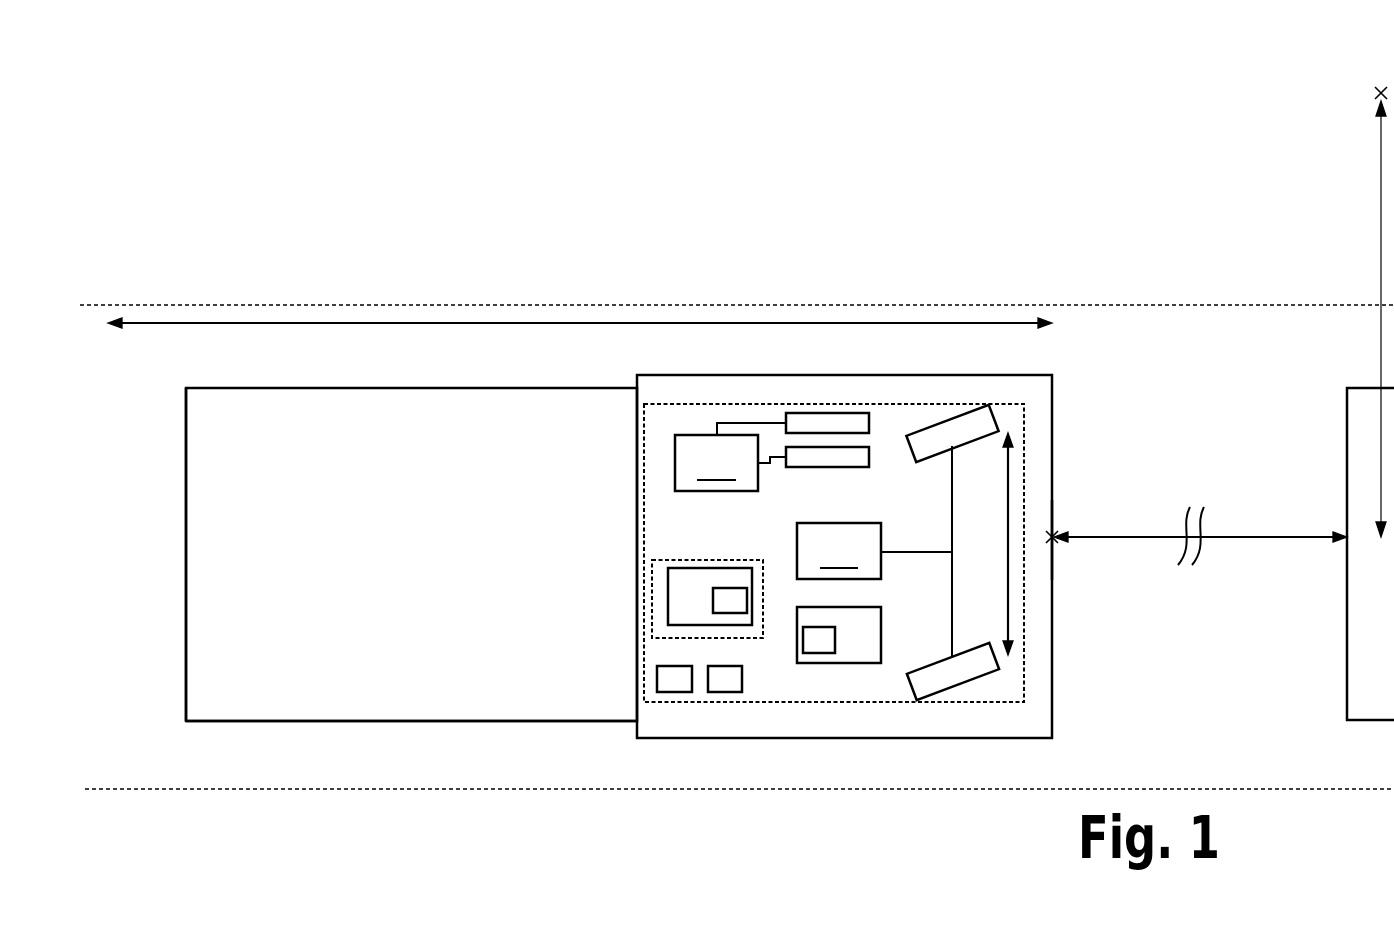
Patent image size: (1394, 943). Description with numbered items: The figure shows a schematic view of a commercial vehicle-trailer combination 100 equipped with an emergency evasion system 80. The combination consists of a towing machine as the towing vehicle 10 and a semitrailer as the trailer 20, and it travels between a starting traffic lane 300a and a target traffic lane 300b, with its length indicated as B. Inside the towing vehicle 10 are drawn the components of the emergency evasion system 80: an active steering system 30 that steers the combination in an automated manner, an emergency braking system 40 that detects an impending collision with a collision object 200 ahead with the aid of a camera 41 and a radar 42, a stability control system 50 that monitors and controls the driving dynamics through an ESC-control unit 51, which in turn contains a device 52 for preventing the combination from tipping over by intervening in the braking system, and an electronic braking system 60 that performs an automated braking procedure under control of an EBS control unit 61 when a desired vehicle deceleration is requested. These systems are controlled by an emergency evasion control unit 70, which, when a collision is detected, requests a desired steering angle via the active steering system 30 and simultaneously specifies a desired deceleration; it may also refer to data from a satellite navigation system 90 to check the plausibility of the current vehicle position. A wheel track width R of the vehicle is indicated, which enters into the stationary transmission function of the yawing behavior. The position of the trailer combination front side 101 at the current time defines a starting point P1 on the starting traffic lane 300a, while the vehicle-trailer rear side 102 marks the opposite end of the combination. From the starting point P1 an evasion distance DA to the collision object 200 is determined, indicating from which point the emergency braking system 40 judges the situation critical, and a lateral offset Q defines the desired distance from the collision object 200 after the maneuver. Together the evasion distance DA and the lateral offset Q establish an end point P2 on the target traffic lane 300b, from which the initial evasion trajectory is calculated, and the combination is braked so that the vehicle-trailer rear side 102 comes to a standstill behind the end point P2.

The towing vehicle 10 is at (845, 738).
The trailer 20 is at (491, 723).
The active steering system 30 is at (874, 551).
The emergency braking system 40 is at (730, 457).
The camera 41 is at (828, 413).
The radar 42 is at (869, 455).
The stability control system 50 is at (652, 600).
The ESC-control unit 51 is at (708, 568).
The device for preventing tipping over 52 is at (713, 598).
The electronic braking system 60 is at (840, 663).
The EBS control unit 61 is at (818, 653).
The emergency evasion control unit 70 is at (673, 692).
The emergency evasion system 80 is at (996, 405).
The satellite navigation system 90 is at (723, 692).
The commercial vehicle-trailer combination 100 is at (569, 752).
The trailer combination front side 101 is at (1068, 556).
The vehicle-trailer rear side 102 is at (174, 553).
The collision object 200 is at (1370, 388).
The starting traffic lane 300a is at (220, 761).
The target traffic lane 300b is at (388, 202).
The length of the commercial vehicle-trailer combination B is at (579, 323).
The wheel track width R is at (1015, 545).
The starting point P1 is at (1068, 528).
The end point P2 is at (1376, 93).
The lateral offset Q is at (1381, 318).
The evasion distance DA is at (1275, 537).